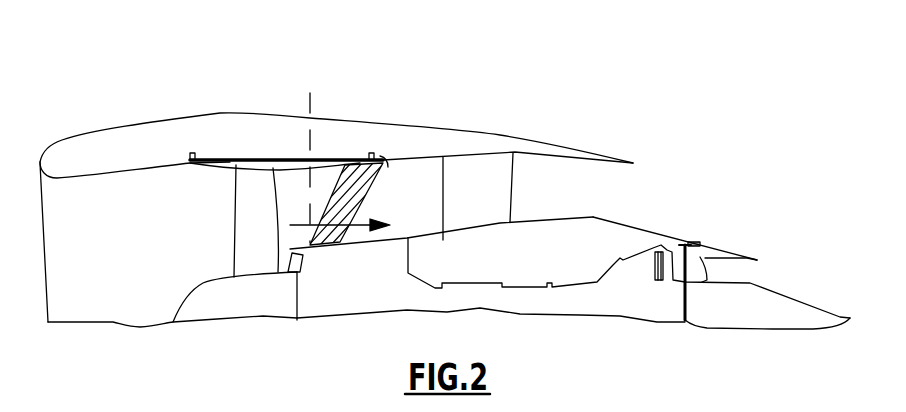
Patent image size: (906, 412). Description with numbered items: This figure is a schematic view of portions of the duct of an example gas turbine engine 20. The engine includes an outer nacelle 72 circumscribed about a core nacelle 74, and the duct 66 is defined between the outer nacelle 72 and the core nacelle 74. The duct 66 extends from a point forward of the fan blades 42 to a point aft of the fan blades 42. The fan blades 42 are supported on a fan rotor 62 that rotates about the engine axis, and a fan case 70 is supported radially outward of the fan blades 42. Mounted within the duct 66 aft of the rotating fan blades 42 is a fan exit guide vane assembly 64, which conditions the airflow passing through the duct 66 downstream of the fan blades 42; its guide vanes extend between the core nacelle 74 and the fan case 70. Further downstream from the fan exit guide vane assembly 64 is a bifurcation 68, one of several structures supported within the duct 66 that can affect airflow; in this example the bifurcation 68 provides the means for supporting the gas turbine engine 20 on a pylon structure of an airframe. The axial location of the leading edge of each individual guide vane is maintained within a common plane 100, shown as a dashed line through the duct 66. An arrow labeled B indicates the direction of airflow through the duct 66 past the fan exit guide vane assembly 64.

The gas turbine engine 20 is at (614, 74).
The fan blades 42 is at (247, 223).
The fan rotor 62 is at (203, 300).
The fan exit guide vane assembly 64 is at (377, 183).
The duct 66 is at (423, 202).
The bifurcation 68 is at (500, 180).
The fan case 70 is at (285, 160).
The outer nacelle 72 is at (160, 138).
The core nacelle 74 is at (590, 217).
The common plane 100 is at (310, 92).
The bypass airflow B is at (318, 220).